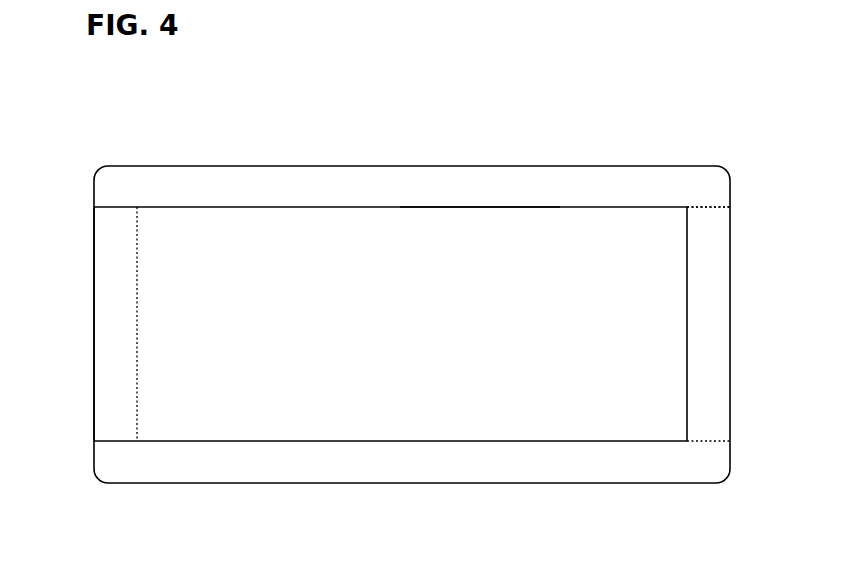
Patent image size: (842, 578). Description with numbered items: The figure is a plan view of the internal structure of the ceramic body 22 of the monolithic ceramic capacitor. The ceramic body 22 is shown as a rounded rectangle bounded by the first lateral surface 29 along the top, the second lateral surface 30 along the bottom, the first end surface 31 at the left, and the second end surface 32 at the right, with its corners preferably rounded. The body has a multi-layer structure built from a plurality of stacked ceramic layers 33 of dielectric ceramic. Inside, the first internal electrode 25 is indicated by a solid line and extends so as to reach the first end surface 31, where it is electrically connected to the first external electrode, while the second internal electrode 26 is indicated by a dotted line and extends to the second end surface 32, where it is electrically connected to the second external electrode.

The ceramic body 22 is at (206, 95).
The first internal electrode 25 is at (118, 207).
The second internal electrode 26 is at (700, 206).
The first lateral surface 29 is at (362, 166).
The second lateral surface 30 is at (424, 483).
The first end surface 31 is at (94, 333).
The second end surface 32 is at (730, 308).
The ceramic layer 33 is at (483, 187).